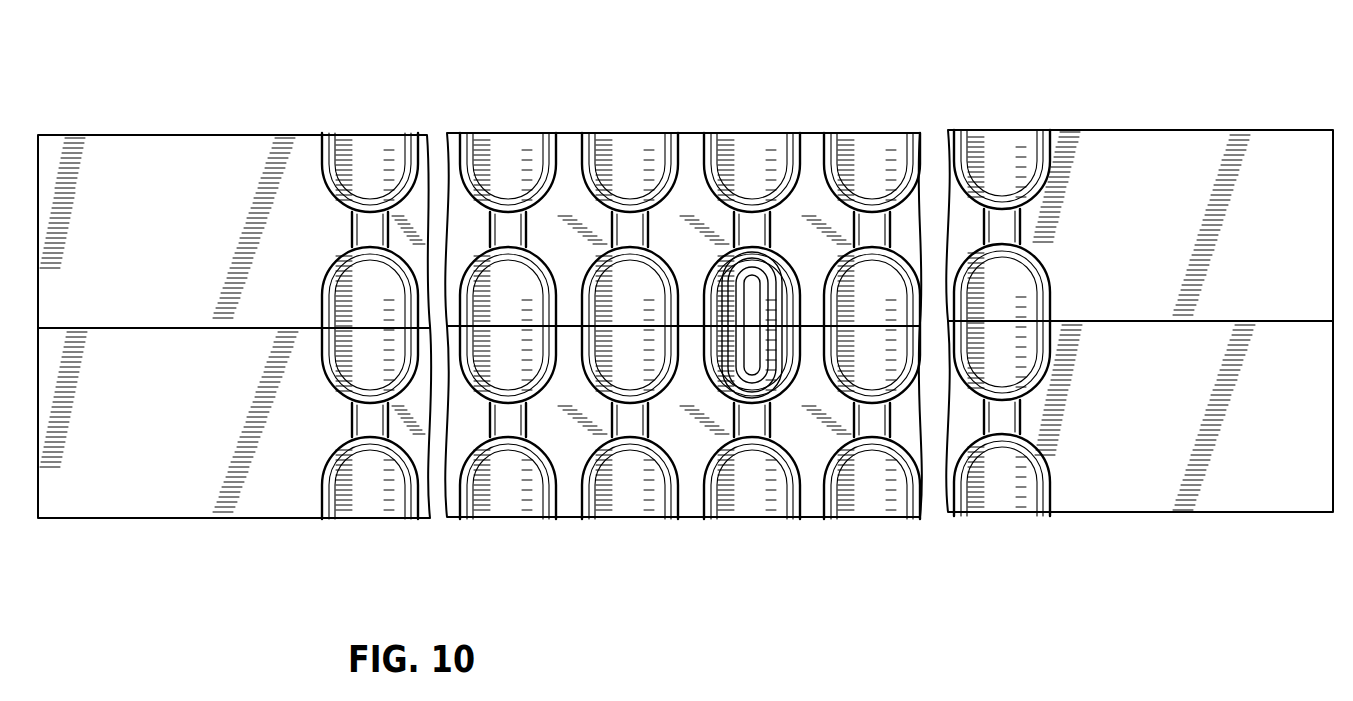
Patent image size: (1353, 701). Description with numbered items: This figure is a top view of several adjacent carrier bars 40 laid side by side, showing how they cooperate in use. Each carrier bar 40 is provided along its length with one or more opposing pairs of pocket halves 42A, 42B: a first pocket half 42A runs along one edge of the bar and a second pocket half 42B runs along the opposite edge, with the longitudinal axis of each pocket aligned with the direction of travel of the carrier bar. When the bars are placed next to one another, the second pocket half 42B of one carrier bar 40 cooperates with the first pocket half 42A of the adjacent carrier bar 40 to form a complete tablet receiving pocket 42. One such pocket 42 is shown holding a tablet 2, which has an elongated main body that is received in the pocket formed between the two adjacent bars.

The carrier bar 40 is at (178, 104).
The tablet receiving pocket 42 is at (653, 342).
The first pocket half 42A is at (640, 150).
The second pocket half 42B is at (645, 290).
The tablet 2 is at (780, 275).